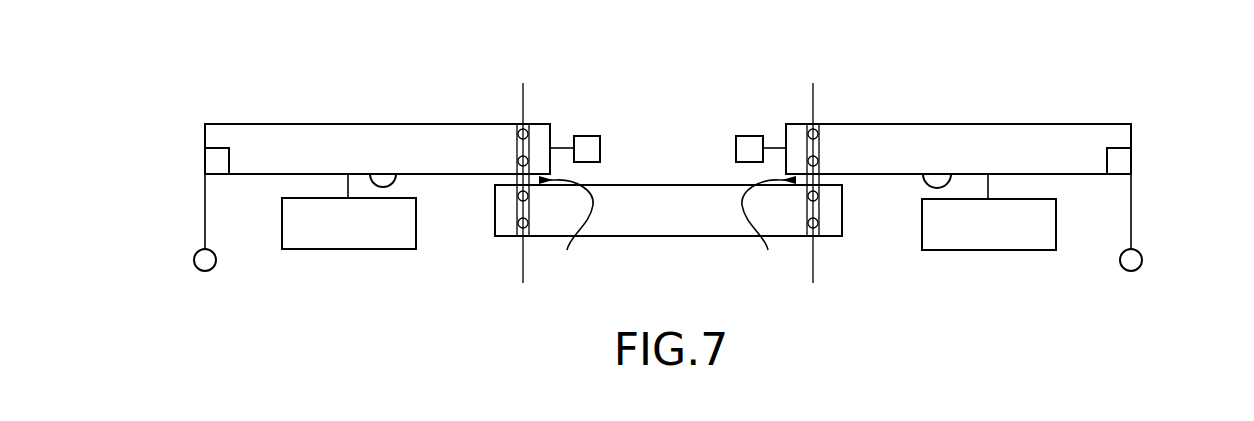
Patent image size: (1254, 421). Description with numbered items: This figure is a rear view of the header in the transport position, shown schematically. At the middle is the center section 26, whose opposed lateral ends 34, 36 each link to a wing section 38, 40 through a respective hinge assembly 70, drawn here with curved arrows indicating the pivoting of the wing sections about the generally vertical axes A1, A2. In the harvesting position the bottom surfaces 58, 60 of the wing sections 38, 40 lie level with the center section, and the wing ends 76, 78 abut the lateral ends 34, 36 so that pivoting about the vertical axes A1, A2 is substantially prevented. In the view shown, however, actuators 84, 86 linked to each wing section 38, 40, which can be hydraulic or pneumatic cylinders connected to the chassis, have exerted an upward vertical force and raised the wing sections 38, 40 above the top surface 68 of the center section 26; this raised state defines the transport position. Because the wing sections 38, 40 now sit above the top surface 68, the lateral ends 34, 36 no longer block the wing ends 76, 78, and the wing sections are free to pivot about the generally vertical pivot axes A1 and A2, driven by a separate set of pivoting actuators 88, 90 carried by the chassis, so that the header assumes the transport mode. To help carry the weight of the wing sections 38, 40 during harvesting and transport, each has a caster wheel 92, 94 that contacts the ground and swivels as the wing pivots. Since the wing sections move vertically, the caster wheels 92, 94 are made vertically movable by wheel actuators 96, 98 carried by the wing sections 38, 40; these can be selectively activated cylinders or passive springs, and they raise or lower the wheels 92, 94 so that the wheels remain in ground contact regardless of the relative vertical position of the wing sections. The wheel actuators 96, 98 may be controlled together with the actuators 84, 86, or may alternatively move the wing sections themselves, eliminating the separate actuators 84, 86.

The center section 26 is at (675, 192).
The lateral end 34 is at (494, 210).
The lateral end 36 is at (843, 213).
The wing section 38 is at (352, 123).
The wing section 40 is at (982, 123).
The bottom surface 58 is at (399, 173).
The bottom surface 60 is at (925, 173).
The top surface 68 is at (617, 185).
The hinge assembly 70 is at (667, 232).
The wing end 76 is at (553, 135).
The wing end 78 is at (785, 135).
The actuator 84 is at (340, 250).
The actuator 86 is at (985, 250).
The pivoting actuator 88 is at (587, 137).
The pivoting actuator 90 is at (750, 135).
The caster wheel 92 is at (216, 261).
The caster wheel 94 is at (1143, 262).
The wheel actuator 96 is at (219, 148).
The wheel actuator 98 is at (1120, 148).
The generally vertical axis A1 is at (523, 90).
The generally vertical axis A2 is at (813, 90).